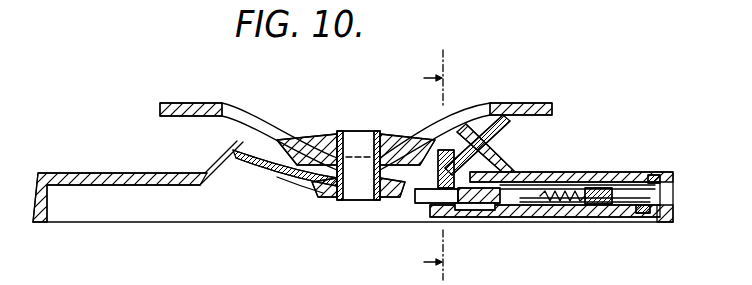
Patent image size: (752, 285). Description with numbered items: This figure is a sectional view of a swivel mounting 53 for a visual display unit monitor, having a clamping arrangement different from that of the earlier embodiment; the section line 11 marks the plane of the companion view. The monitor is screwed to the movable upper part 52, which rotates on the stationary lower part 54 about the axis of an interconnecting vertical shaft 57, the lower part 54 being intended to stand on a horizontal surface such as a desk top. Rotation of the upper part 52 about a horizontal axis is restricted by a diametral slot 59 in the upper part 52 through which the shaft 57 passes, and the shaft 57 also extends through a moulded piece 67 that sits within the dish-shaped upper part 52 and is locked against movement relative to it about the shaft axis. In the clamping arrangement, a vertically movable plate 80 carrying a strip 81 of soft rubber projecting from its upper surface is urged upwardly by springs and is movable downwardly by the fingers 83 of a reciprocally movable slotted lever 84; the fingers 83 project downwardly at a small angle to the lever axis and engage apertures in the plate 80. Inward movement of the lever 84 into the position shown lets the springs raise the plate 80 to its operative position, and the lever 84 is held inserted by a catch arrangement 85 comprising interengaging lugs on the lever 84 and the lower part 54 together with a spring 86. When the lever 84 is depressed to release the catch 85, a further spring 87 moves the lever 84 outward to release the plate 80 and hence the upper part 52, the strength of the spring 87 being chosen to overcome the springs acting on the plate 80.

The section line 11 is at (417, 167).
The movable upper part 52 is at (206, 122).
The swivel mounting 53 is at (70, 150).
The stationary lower part 54 is at (126, 173).
The vertical shaft 57 is at (348, 185).
The diametral slot 59 is at (290, 182).
The moulded piece 67 is at (300, 137).
The vertically movable plate 80 is at (490, 150).
The strip of soft rubber 81 is at (450, 158).
The fingers 83 is at (418, 198).
The slotted lever 84 is at (503, 206).
The catch arrangement 85 is at (652, 177).
The spring 86 is at (643, 216).
The further spring 87 is at (576, 172).